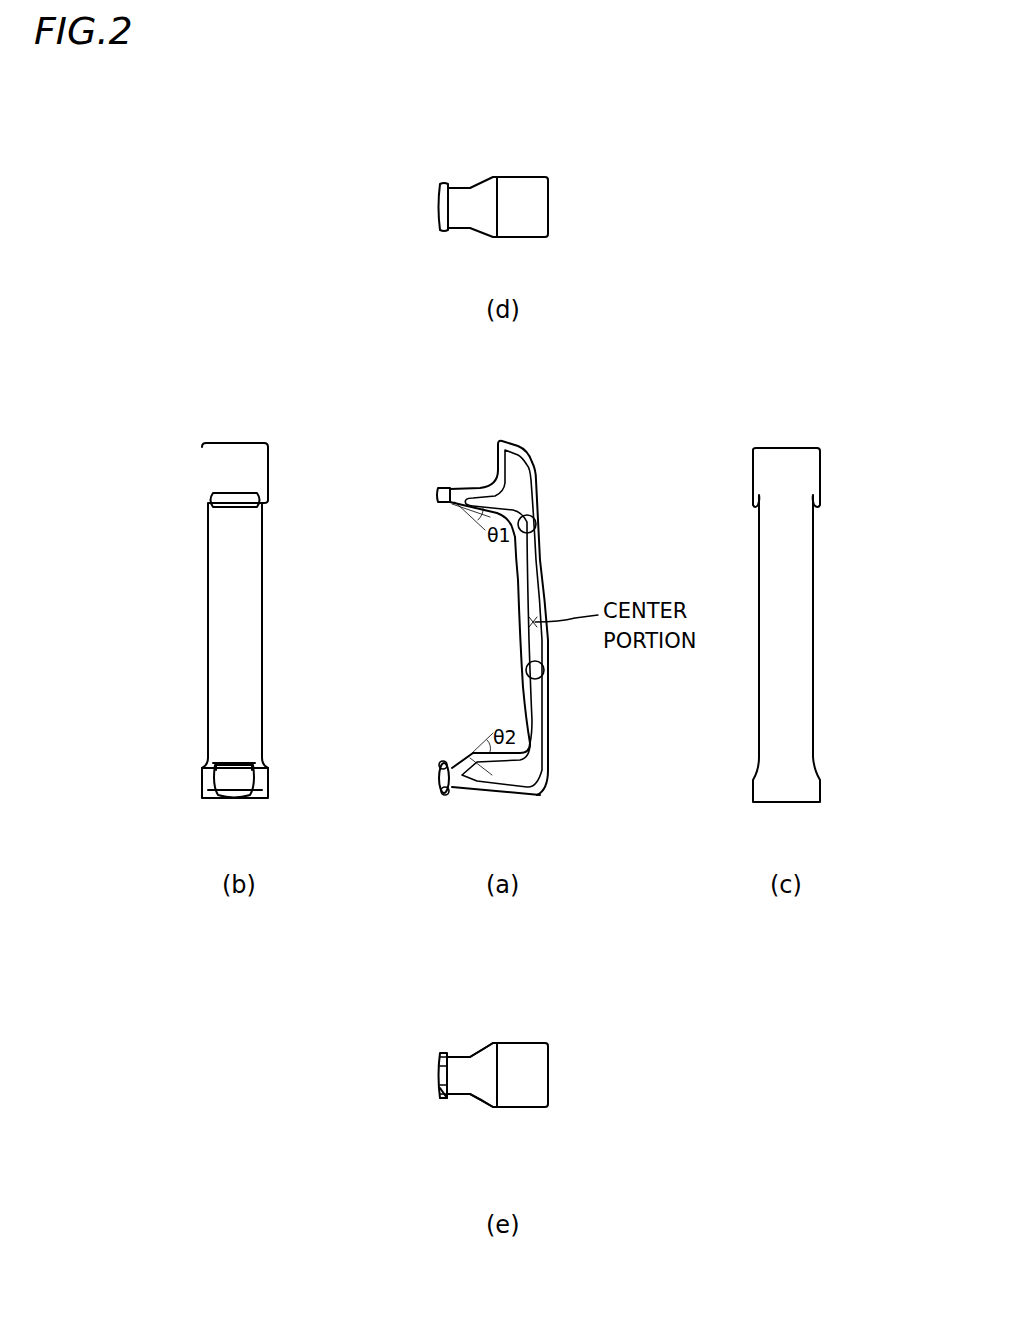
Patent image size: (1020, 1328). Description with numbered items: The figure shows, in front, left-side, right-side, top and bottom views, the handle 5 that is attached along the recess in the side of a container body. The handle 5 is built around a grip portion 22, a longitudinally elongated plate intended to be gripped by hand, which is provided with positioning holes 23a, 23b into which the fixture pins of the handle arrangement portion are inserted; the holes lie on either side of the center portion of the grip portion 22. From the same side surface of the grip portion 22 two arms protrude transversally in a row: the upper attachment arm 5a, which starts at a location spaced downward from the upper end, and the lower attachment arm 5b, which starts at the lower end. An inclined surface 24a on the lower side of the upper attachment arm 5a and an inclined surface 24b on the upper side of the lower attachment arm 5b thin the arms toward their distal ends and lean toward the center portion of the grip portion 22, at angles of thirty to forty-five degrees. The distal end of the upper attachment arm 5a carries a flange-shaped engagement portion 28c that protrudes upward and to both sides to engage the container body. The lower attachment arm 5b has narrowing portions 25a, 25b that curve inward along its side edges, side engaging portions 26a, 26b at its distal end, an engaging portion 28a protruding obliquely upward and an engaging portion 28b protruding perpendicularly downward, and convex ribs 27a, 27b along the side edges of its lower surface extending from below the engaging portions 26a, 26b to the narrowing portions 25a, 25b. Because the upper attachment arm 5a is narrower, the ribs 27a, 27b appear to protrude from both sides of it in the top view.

The handle 5 is at (553, 470).
The upper attachment arm 5a is at (222, 497).
The lower attachment arm 5b is at (215, 782).
The grip portion 22 is at (215, 627).
The positioning hole 23a is at (536, 524).
The positioning hole 23b is at (544, 670).
The inclined surface 24a is at (453, 503).
The inclined surface 24b is at (468, 757).
The narrowing portion 25a is at (488, 1043).
The narrowing portion 25b is at (470, 1100).
The engaging portion 26a is at (438, 778).
The engaging portion 26b is at (445, 1100).
The rib 27a is at (457, 230).
The rib 27b is at (467, 187).
The engaging portion 28a is at (438, 765).
The engaging portion 28b is at (442, 792).
The engagement portion 28c is at (438, 207).